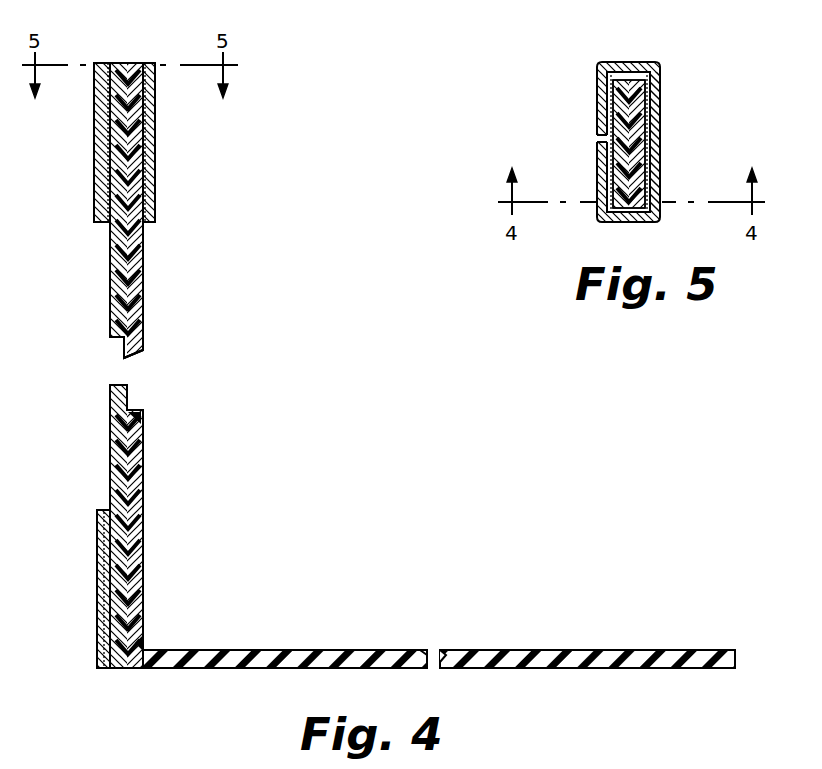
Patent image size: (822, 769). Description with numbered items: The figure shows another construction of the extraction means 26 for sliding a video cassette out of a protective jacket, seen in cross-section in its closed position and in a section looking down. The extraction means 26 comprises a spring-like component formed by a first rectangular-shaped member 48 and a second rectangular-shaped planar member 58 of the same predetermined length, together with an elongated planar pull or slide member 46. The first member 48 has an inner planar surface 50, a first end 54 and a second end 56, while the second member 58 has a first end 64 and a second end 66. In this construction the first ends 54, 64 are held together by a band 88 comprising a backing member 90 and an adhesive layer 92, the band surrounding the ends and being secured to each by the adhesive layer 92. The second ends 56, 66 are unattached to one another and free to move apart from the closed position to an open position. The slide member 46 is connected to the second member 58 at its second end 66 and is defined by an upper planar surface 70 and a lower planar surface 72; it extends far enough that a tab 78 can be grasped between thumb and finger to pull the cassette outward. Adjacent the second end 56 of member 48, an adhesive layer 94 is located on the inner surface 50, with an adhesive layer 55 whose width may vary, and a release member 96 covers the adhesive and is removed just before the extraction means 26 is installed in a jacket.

In FIG. 4, the extraction means 26 is at (131, 192).
In FIG. 5, the extraction means 26 is at (628, 137).
In FIG. 4, the pull or slide member 46 is at (433, 644).
In FIG. 4, the first rectangular-shaped member 48 is at (110, 318).
In FIG. 4, the inner planar surface 50 is at (110, 402).
In FIG. 4, the first end 54 is at (118, 62).
In FIG. 5, the first end 54 is at (612, 90).
In FIG. 4, the adhesive layer 55 is at (100, 668).
In FIG. 4, the second end 56 is at (120, 669).
In FIG. 4, the second rectangular-shaped planar member 58 is at (138, 352).
In FIG. 4, the first end 64 is at (132, 62).
In FIG. 5, the first end 64 is at (648, 96).
In FIG. 4, the second end 66 is at (144, 650).
In FIG. 4, the upper planar surface 70 is at (222, 650).
In FIG. 4, the lower planar surface 72 is at (596, 668).
In FIG. 4, the tab 78 is at (690, 650).
In FIG. 4, the band 88 is at (131, 162).
In FIG. 4, the backing member 90 is at (155, 176).
In FIG. 5, the backing member 90 is at (661, 128).
In FIG. 4, the adhesive layer 92 is at (147, 230).
In FIG. 5, the adhesive layer 92 is at (650, 163).
In FIG. 4, the adhesive layer 94 is at (76, 563).
In FIG. 4, the release member 96 is at (97, 580).